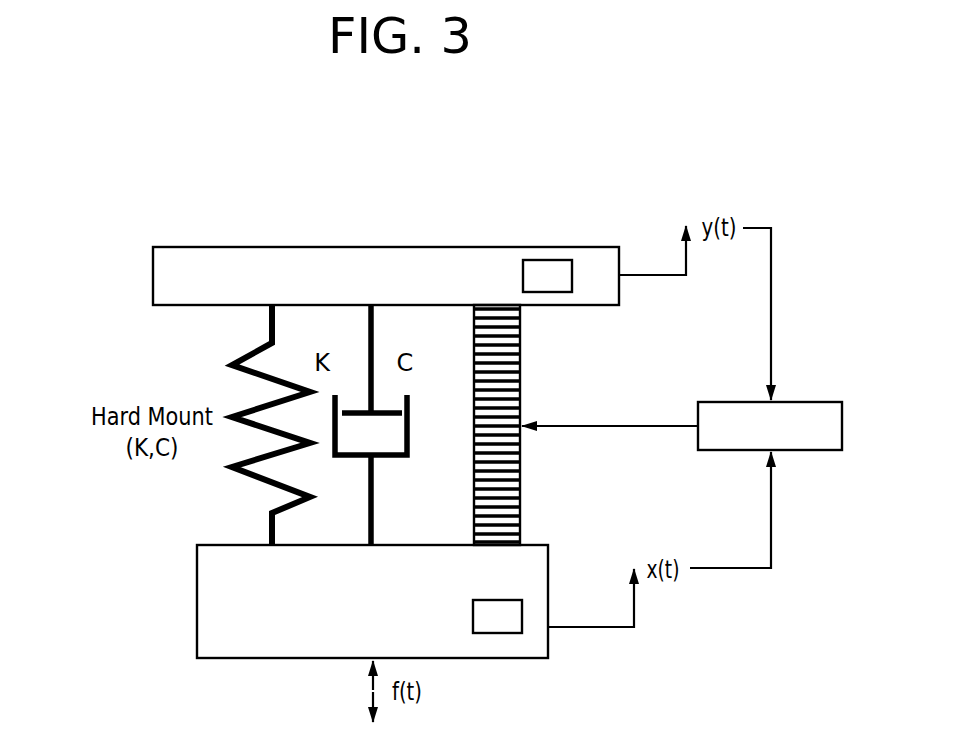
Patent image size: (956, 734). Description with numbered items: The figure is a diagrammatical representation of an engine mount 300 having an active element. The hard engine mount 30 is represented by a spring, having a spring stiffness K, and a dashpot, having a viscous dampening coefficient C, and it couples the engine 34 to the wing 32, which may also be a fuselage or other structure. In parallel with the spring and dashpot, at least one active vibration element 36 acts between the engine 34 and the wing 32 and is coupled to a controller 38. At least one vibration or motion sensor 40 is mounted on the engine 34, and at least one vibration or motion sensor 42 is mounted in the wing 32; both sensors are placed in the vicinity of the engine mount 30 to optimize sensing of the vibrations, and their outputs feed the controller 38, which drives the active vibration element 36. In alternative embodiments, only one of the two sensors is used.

The engine mount 300 is at (128, 244).
The wing 32 is at (395, 247).
The vibration or motion sensor 42 is at (541, 275).
The engine mount 30 is at (232, 466).
The active vibration element 36 is at (521, 479).
The engine 34 is at (197, 622).
The vibration or motion sensor 40 is at (512, 633).
The controller 38 is at (813, 402).